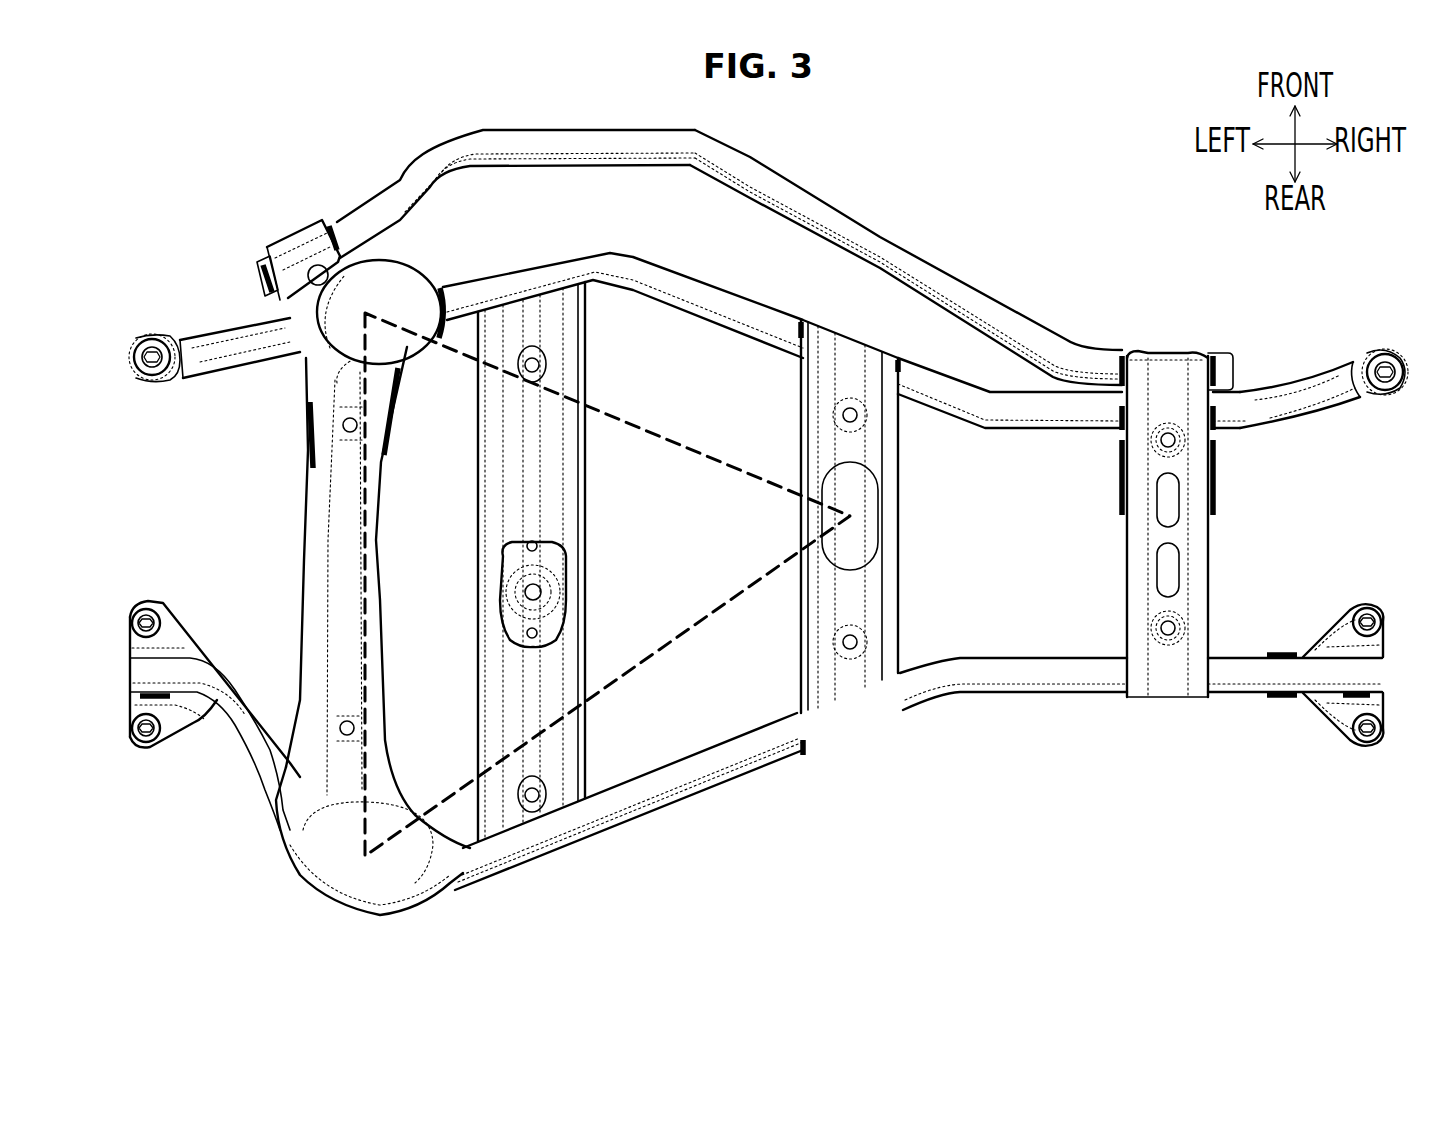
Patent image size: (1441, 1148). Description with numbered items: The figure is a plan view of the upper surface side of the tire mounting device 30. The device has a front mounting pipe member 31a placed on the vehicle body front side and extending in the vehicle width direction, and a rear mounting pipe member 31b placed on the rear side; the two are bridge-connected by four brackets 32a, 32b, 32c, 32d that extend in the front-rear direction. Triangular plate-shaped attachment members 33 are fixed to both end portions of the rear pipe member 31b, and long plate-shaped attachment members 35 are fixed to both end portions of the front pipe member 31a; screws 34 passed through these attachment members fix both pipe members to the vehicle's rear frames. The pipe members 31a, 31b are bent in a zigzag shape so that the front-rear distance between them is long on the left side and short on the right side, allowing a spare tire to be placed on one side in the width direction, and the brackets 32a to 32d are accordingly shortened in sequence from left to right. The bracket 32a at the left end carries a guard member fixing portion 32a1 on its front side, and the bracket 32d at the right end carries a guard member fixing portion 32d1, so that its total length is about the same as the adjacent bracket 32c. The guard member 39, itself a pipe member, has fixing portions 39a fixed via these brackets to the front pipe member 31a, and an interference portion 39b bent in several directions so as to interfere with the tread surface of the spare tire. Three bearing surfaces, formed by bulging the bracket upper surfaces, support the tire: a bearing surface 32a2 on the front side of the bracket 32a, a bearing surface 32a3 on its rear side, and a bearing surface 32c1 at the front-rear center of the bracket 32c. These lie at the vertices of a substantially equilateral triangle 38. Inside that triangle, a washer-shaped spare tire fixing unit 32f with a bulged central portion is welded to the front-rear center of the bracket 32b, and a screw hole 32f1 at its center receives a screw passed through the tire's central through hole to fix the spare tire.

The tire mounting device 30 is at (1003, 190).
The front mounting pipe member 31a is at (665, 285).
The rear mounting pipe member 31b is at (695, 790).
The bracket 32a is at (311, 577).
The guard member fixing portion 32a1 is at (275, 290).
The bearing surface 32a2 is at (400, 292).
The bearing surface 32a3 is at (348, 863).
The bracket 32b is at (490, 534).
The bracket 32c is at (898, 480).
The bearing surface 32c1 is at (862, 532).
The bracket 32d is at (1200, 565).
The guard member fixing portion 32d1 is at (1226, 380).
The spare tire fixing unit 32f is at (552, 572).
The screw hole 32f1 is at (540, 596).
The attachment member 33 is at (175, 745).
The screw 34 is at (140, 359).
The attachment member 35 is at (180, 378).
The substantially equilateral triangle 38 is at (650, 430).
The guard member 39 is at (585, 137).
The fixing portion 39a is at (333, 206).
The interference portion 39b is at (813, 205).